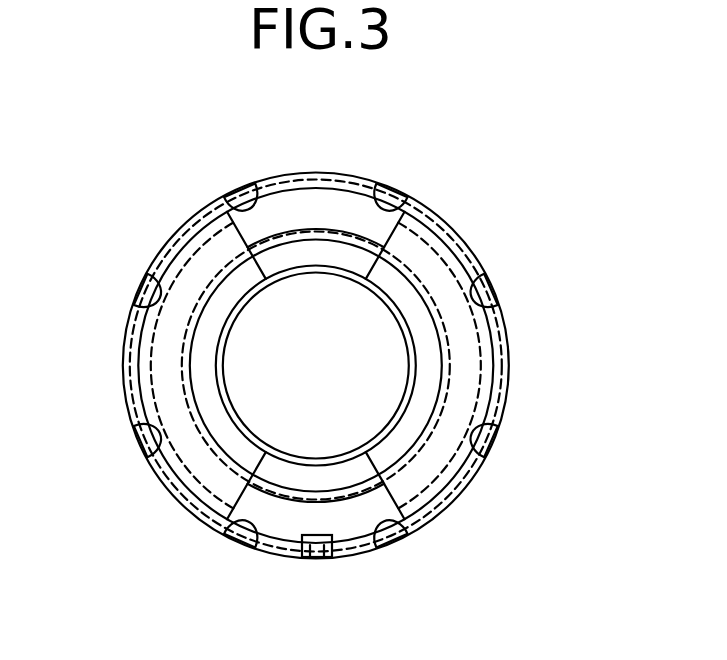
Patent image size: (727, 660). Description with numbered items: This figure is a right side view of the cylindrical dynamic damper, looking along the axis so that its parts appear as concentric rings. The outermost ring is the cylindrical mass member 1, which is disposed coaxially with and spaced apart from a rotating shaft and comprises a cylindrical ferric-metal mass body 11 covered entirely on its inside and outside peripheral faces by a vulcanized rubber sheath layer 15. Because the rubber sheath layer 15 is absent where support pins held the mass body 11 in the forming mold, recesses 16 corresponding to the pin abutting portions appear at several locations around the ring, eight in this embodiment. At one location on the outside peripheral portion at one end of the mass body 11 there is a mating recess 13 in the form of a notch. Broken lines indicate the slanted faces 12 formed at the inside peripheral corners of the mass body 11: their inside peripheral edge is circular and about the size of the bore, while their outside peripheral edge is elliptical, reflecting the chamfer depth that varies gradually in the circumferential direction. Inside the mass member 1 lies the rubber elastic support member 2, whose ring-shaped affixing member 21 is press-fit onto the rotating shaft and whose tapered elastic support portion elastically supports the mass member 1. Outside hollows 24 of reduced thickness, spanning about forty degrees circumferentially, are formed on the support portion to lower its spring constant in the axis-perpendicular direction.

The mass member 1 is at (306, 167).
The rubber elastic support member 2 is at (303, 282).
The mass body 11 is at (457, 232).
The slanted face 12 is at (457, 345).
The mating recess 13 is at (318, 560).
The rubber sheath layer 15 is at (176, 232).
The recess 16 is at (243, 193).
The affixing member 21 is at (223, 433).
The outside hollow 24 is at (122, 371).